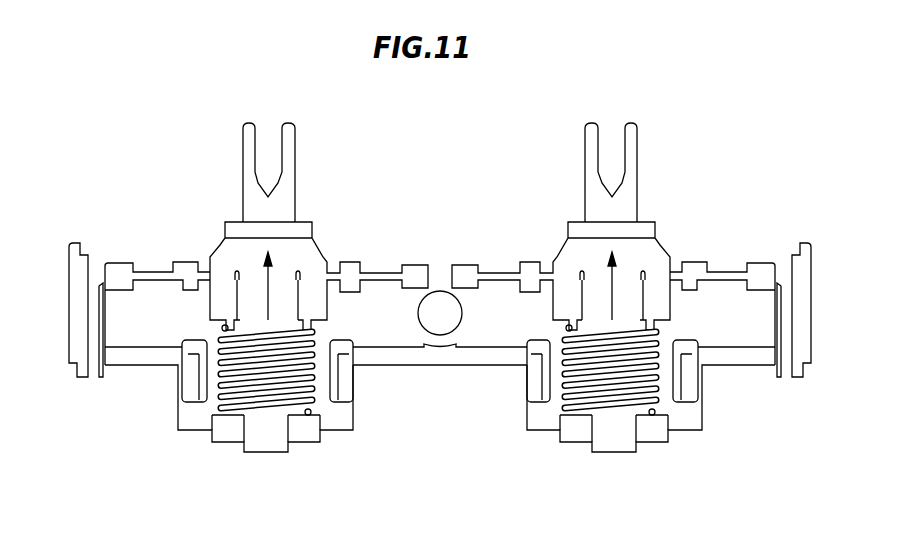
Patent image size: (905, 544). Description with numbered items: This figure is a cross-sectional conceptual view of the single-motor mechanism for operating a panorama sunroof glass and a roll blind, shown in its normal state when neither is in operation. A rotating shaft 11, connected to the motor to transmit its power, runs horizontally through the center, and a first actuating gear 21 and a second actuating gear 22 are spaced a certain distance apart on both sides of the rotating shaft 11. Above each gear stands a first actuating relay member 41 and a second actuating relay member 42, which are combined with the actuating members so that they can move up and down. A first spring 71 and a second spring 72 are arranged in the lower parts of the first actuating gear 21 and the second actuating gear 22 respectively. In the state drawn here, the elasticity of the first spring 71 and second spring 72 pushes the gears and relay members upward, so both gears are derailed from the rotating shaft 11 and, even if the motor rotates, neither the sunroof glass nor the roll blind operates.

The rotating shaft 11 is at (448, 318).
The first actuating gear 21 is at (223, 267).
The second actuating gear 22 is at (657, 267).
The first actuating relay member 41 is at (234, 230).
The second actuating relay member 42 is at (646, 230).
The first spring 71 is at (227, 402).
The second spring 72 is at (653, 402).